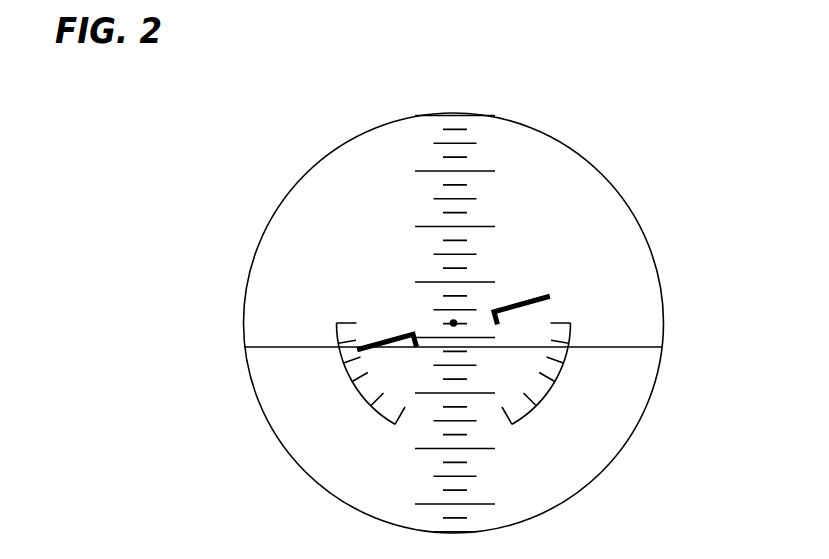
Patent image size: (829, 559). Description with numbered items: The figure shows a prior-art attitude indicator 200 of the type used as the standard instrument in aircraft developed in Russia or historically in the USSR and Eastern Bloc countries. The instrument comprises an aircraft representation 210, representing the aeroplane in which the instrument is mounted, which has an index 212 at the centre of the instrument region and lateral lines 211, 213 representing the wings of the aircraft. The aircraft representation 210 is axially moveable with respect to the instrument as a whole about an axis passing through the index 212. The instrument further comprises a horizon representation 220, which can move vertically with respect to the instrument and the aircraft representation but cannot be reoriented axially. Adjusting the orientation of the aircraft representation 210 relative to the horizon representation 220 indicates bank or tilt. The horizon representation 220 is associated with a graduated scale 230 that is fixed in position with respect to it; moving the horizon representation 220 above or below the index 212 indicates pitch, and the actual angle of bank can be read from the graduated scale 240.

The attitude indicator 200 is at (632, 178).
The aircraft representation 210 is at (557, 297).
The lateral line 211 is at (385, 349).
The index 212 is at (450, 328).
The lateral line 213 is at (527, 311).
The horizon representation 220 is at (620, 348).
The graduated scale 230 is at (472, 167).
The graduated scale 240 is at (333, 325).